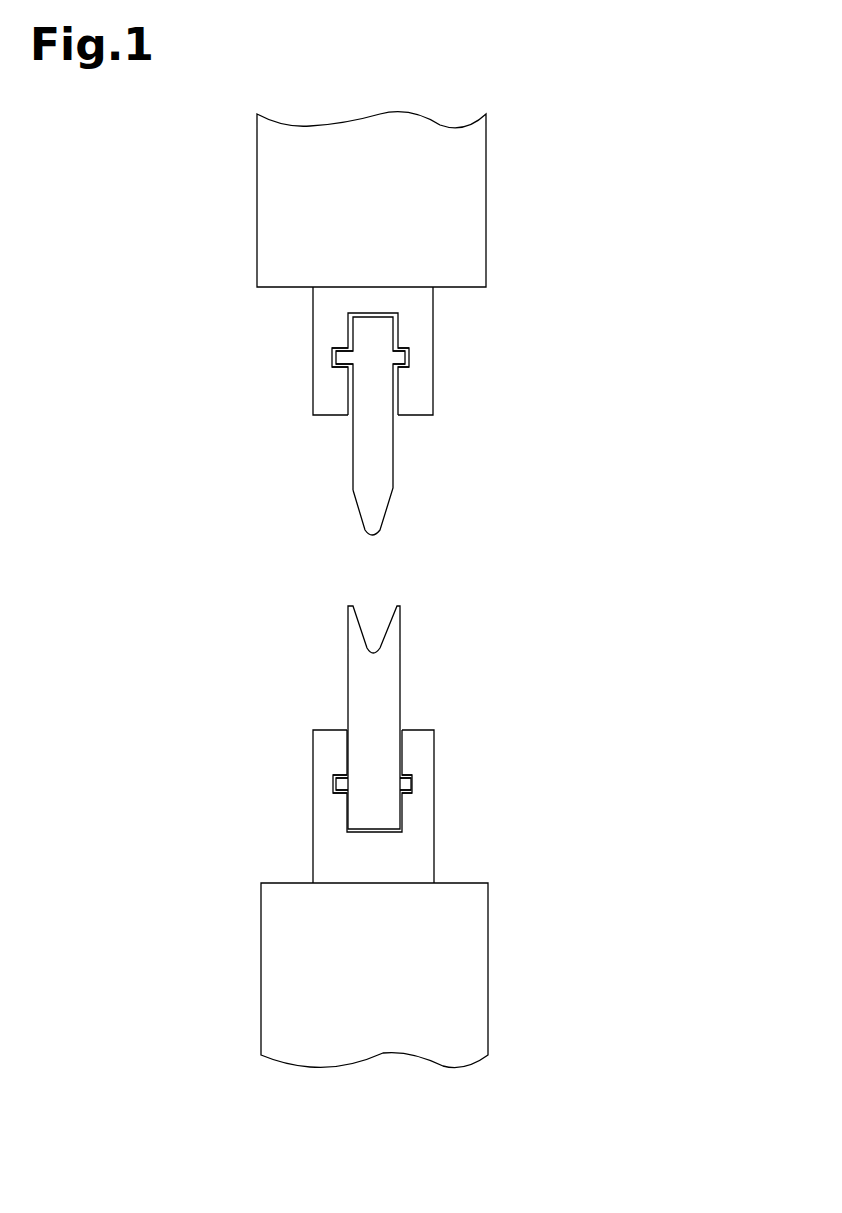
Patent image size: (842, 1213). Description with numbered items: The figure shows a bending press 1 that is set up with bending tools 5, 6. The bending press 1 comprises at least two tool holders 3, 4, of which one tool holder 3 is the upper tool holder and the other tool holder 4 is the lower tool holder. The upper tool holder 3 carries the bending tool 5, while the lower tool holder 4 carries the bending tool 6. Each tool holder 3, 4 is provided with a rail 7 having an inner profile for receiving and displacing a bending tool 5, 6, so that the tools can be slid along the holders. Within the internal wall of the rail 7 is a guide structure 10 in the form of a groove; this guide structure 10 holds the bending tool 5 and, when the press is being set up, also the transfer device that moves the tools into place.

The bending press 1 is at (580, 133).
The tool holder 3 is at (433, 335).
The tool holder 4 is at (434, 813).
The bending tool 5 is at (395, 480).
The bending tool 6 is at (400, 670).
The rail 7 is at (350, 417).
The guide structure 10 is at (333, 350).